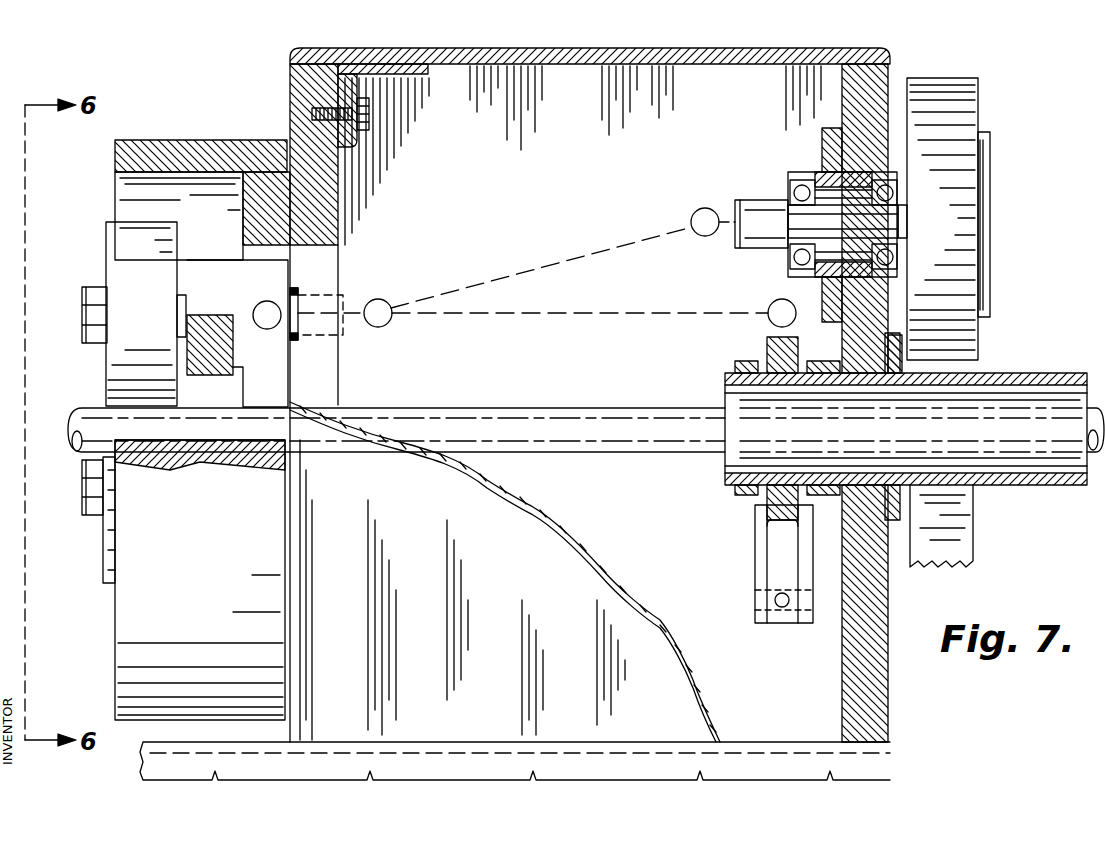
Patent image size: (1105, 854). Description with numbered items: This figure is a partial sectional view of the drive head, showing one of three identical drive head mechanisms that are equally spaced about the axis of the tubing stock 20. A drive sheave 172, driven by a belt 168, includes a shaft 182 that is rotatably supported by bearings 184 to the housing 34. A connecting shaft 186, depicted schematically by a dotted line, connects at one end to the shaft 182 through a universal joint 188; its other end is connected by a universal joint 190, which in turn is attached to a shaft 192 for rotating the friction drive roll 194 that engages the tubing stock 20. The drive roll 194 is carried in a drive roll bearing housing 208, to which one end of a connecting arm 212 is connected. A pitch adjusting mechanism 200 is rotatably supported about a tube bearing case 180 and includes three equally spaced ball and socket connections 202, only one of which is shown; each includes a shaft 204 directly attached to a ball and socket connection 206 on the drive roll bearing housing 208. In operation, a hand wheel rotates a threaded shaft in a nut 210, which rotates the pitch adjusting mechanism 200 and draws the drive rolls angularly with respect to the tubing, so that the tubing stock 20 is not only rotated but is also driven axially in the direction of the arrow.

The tubing stock 20 is at (594, 410).
The housing 34 is at (892, 58).
The belt 168 is at (975, 544).
The drive sheave 172 is at (970, 110).
The tube bearing case 180 is at (1024, 372).
The shaft 182 is at (800, 213).
The bearings 184 is at (832, 168).
The connecting shaft 186 is at (562, 262).
The universal joint 188 is at (693, 228).
The universal joint 190 is at (378, 300).
The shaft 192 is at (326, 294).
The friction drive roll 194 is at (115, 234).
The pitch adjusting mechanism 200 is at (756, 545).
The ball and socket connection 202 is at (773, 308).
The shaft 204 is at (566, 317).
The ball and socket connection 206 is at (262, 302).
The drive roll bearing housing 208 is at (225, 260).
The nut 210 is at (784, 608).
The connecting arm 212 is at (204, 367).